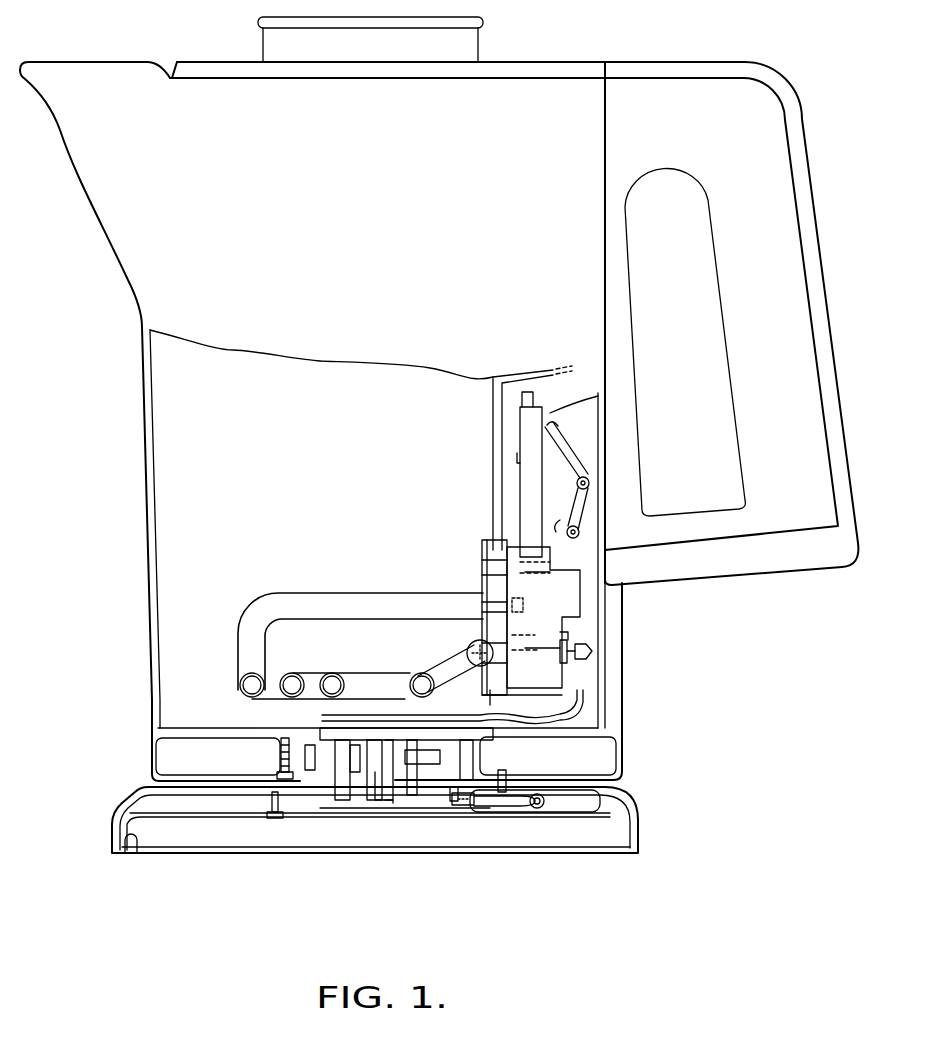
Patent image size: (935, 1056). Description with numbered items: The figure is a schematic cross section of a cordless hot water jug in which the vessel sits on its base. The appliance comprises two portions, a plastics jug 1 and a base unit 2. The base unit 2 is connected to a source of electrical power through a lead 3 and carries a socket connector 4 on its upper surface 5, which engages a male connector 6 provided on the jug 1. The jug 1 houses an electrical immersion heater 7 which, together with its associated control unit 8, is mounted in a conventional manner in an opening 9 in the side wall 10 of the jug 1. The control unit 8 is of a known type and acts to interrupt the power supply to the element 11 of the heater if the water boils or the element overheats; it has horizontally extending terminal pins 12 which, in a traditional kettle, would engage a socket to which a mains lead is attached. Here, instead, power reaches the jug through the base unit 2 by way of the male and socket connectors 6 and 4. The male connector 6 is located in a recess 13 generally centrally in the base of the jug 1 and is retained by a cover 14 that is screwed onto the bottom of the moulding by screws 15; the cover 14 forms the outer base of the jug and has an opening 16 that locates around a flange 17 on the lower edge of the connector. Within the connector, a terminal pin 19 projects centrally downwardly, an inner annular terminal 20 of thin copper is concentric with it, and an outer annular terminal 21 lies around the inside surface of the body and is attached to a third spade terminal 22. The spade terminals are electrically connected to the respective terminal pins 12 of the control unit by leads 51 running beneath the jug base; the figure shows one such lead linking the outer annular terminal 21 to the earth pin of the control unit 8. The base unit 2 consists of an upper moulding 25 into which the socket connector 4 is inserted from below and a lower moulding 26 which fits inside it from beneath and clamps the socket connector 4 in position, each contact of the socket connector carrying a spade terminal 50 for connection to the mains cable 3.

The plastics jug 1 is at (142, 494).
The base unit 2 is at (640, 832).
The lead 3 is at (595, 800).
The socket connector 4 is at (333, 748).
The upper surface 5 is at (550, 787).
The male connector 6 is at (333, 760).
The electrical immersion heater 7 is at (238, 630).
The control unit 8 is at (582, 605).
The opening 9 is at (498, 553).
The side wall 10 is at (493, 439).
The element 11 is at (307, 600).
The terminal pins 12 is at (583, 652).
The recess 13 is at (322, 727).
The cover 14 is at (152, 760).
The screws 15 is at (285, 773).
The opening 16 is at (458, 797).
The flange 17 is at (310, 770).
The terminal pin 19 is at (358, 772).
The inner annular terminal 20 is at (395, 730).
The outer annular terminal 21 is at (423, 757).
The third spade terminal 22 is at (423, 728).
The upper moulding 25 is at (118, 823).
The lower moulding 26 is at (133, 855).
The spade terminal 50 is at (462, 797).
The leads 51 is at (577, 698).